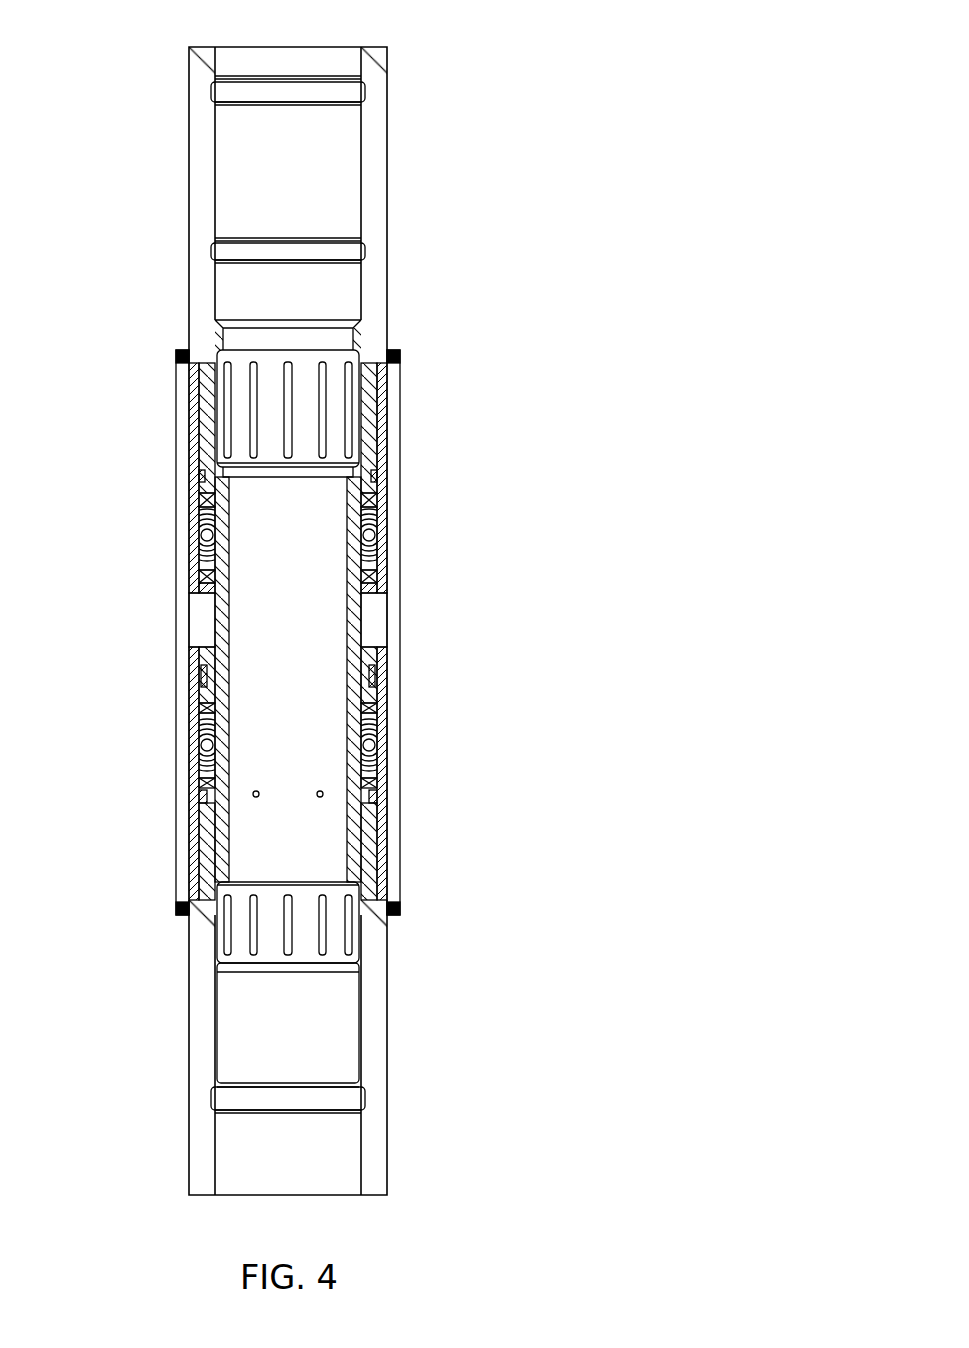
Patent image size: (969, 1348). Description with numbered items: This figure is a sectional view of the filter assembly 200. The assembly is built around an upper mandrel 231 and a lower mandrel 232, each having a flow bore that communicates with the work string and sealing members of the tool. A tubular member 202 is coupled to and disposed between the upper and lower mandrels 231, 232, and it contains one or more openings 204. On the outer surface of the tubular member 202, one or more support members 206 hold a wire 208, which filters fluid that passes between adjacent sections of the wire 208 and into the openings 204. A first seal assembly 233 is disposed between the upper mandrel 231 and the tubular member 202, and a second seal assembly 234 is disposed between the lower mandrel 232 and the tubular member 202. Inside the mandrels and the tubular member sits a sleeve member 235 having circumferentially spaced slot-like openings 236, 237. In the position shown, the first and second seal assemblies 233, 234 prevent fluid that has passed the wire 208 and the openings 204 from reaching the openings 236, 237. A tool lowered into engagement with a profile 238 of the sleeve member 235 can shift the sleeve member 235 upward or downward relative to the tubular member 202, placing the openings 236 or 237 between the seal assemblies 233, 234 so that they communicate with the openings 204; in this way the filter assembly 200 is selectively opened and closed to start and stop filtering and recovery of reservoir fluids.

The filter assembly 200 is at (545, 57).
The tubular member 202 is at (387, 392).
The openings 204 is at (380, 635).
The support members 206 is at (396, 352).
The wire 208 is at (400, 450).
The upper mandrel 231 is at (387, 158).
The lower mandrel 232 is at (388, 1020).
The first seal assembly 233 is at (385, 527).
The second seal assembly 234 is at (375, 745).
The sleeve member 235 is at (227, 715).
The openings 236 is at (290, 397).
The openings 237 is at (288, 960).
The profile 238 is at (218, 342).